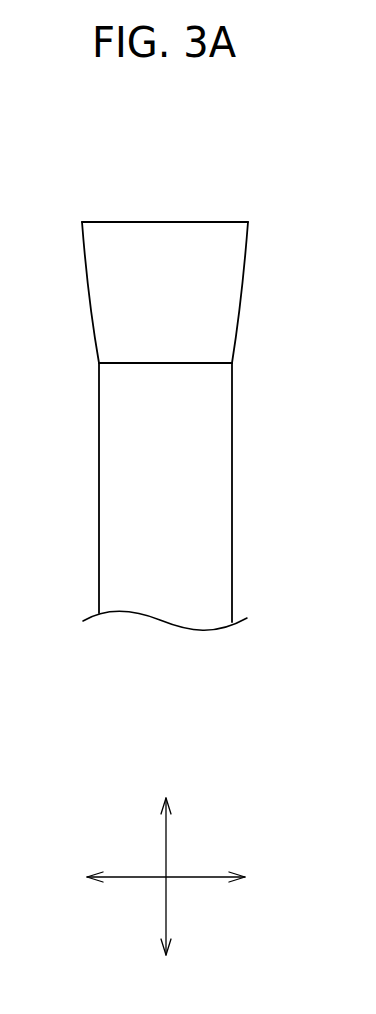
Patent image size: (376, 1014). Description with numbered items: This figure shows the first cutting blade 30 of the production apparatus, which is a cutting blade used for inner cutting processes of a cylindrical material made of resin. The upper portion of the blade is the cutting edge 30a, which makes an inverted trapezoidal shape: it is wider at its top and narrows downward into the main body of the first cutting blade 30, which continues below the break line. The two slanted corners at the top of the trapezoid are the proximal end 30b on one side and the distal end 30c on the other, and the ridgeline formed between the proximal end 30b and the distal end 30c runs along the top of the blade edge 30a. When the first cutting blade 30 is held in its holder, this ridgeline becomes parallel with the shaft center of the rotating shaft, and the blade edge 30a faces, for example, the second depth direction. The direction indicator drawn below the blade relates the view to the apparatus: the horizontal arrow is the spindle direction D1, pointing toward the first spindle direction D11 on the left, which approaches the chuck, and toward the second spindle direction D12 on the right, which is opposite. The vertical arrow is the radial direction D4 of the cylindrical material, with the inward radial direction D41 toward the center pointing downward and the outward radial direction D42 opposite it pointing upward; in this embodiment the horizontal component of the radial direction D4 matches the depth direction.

The first cutting blade 30 is at (218, 487).
The cutting edge 30a is at (161, 222).
The proximal end 30b is at (82, 222).
The distal end 30c is at (248, 222).
The spindle direction D1 is at (202, 877).
The first spindle direction D11 is at (73, 877).
The second spindle direction D12 is at (259, 877).
The radial direction D4 is at (167, 835).
The inward radial direction D41 is at (168, 960).
The outward radial direction D42 is at (168, 792).